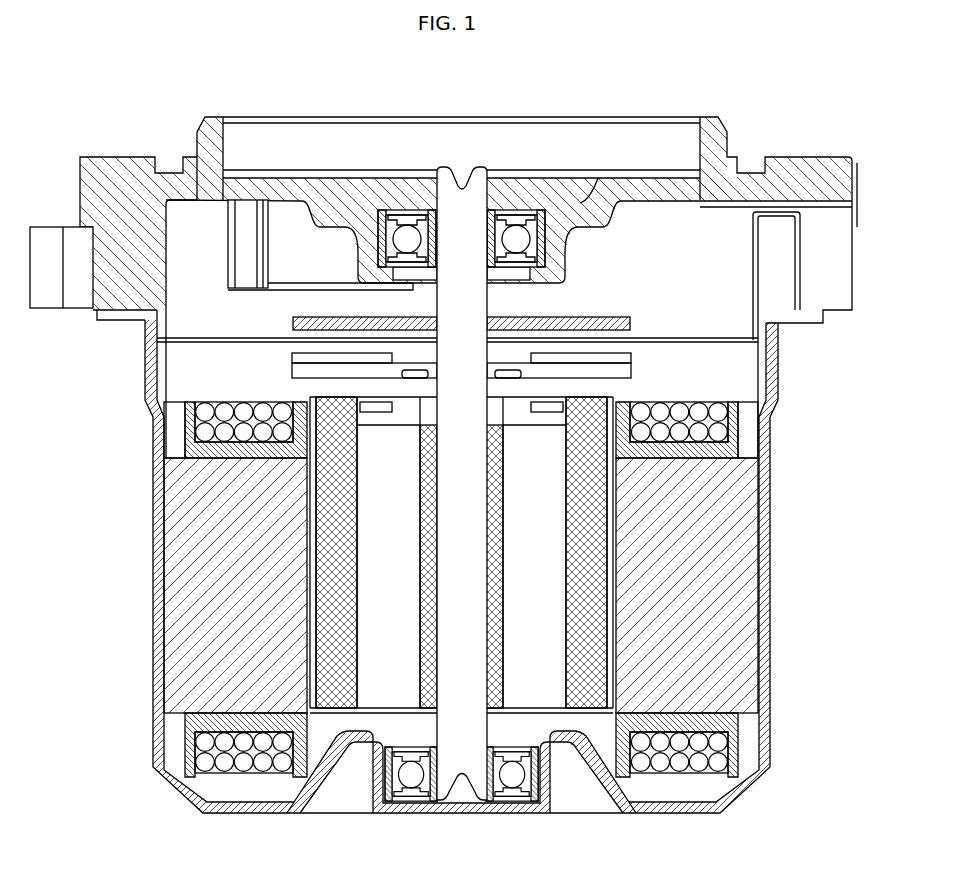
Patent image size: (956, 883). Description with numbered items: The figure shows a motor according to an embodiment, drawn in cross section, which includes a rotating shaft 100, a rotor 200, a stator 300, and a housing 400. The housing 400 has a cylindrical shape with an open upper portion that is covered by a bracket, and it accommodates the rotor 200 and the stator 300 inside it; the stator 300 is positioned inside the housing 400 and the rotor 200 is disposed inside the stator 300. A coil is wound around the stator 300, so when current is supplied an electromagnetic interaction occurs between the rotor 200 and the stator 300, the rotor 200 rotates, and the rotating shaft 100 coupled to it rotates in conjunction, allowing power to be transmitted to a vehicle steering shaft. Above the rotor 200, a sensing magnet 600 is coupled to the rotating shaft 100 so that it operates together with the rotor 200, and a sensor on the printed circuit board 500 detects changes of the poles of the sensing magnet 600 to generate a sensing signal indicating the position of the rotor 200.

The rotating shaft 100 is at (464, 657).
The rotor 200 is at (552, 546).
The stator 300 is at (712, 510).
The housing 400 is at (789, 442).
The printed circuit board 500 is at (292, 321).
The sensing magnet 600 is at (292, 360).